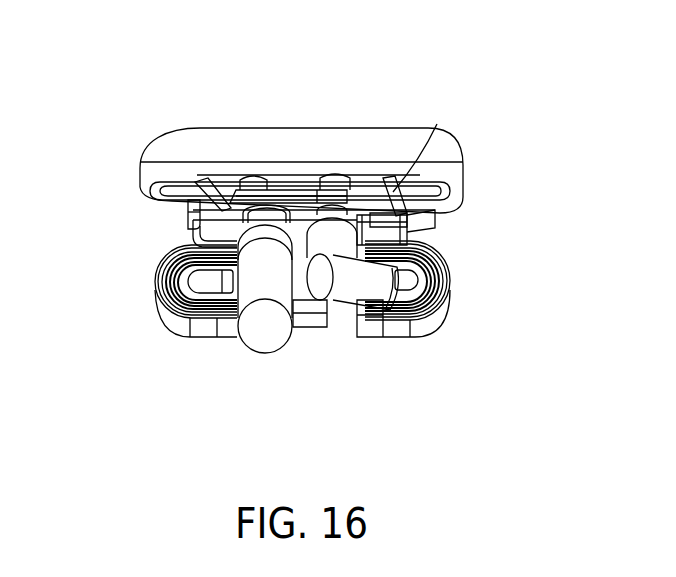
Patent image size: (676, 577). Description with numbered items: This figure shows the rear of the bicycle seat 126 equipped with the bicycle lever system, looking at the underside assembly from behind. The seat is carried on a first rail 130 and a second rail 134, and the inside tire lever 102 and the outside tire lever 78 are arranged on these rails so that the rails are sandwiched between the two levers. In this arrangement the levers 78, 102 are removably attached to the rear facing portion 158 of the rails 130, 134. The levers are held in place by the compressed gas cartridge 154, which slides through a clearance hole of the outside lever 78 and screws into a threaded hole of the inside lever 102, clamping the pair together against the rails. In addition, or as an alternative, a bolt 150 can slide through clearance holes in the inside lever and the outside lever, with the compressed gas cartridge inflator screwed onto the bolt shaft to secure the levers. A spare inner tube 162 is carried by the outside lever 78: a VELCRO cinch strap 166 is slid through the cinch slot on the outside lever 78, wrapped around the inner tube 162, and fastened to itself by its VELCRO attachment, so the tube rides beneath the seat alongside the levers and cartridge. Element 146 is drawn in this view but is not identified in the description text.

The outside tire lever 78 is at (207, 236).
The inside tire lever 102 is at (193, 215).
The bicycle seat 126 is at (433, 130).
The first rail 130 is at (207, 181).
The second rail 134 is at (410, 216).
The tilted cylinder 146 is at (382, 282).
The bolt 150 is at (320, 178).
The compressed gas cartridge 154 is at (261, 343).
The rear facing portion 158 is at (243, 174).
The spare inner tube 162 is at (436, 322).
The cinch strap 166 is at (316, 322).